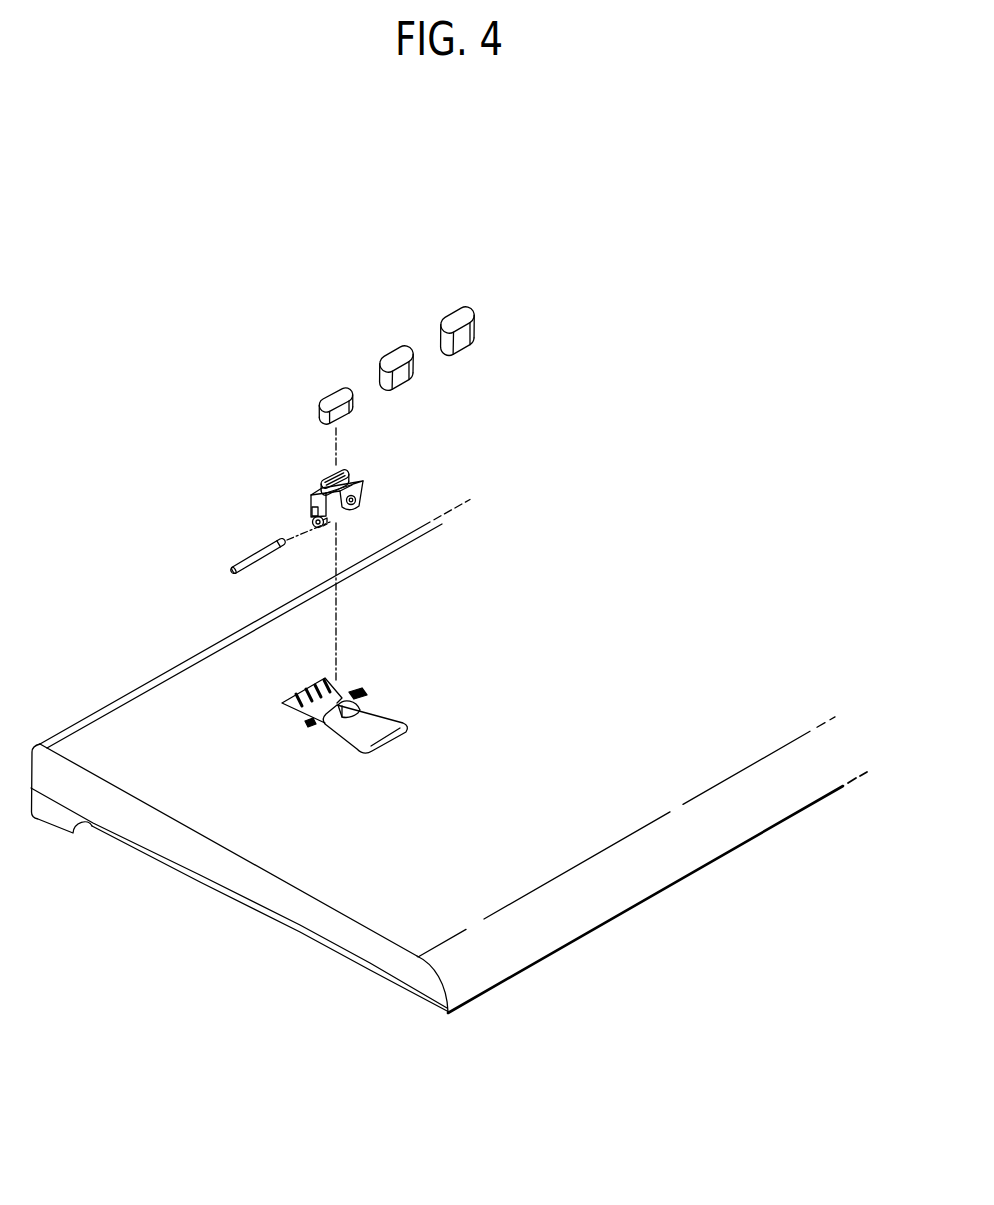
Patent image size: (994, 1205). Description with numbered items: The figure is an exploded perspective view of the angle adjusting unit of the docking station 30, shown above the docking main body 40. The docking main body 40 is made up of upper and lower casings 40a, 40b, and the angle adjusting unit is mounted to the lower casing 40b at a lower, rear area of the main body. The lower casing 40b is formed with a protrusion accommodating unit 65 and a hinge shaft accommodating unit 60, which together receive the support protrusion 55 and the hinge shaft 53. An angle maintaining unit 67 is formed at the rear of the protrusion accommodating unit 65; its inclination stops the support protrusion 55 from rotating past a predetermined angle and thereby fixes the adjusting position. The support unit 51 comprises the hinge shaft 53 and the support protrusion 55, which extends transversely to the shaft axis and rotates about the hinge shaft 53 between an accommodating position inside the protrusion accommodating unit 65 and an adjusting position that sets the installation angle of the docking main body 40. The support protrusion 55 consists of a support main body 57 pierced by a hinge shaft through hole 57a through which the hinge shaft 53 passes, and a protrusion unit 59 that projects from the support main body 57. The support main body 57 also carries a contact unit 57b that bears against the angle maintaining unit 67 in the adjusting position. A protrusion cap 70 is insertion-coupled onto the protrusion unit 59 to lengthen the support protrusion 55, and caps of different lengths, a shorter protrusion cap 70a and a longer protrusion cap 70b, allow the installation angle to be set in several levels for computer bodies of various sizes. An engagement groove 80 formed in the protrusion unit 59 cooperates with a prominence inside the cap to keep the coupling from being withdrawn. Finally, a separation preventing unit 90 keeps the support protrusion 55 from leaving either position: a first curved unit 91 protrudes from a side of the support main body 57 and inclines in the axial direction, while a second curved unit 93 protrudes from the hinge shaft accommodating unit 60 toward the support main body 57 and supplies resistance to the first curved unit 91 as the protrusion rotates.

The docking station 30 is at (669, 402).
The docking main body 40 is at (382, 1060).
The upper casing 40a is at (400, 987).
The lower casing 40b is at (328, 927).
The support unit 51 is at (202, 370).
The hinge shaft 53 is at (233, 563).
The support protrusion 55 is at (250, 396).
The support main body 57 is at (252, 444).
The hinge shaft through hole 57a is at (314, 522).
The contact unit 57b is at (313, 500).
The protrusion unit 59 is at (323, 478).
The hinge shaft accommodating unit 60 is at (358, 711).
The protrusion accommodating unit 65 is at (367, 742).
The angle maintaining unit 67 is at (325, 710).
The protrusion cap 70 is at (393, 353).
The protrusion cap 70a is at (325, 398).
The protrusion cap 70b is at (453, 312).
The engagement groove 80 is at (353, 481).
The separation preventing unit 90 is at (429, 595).
The first curved unit 91 is at (337, 513).
The second curved unit 93 is at (352, 692).